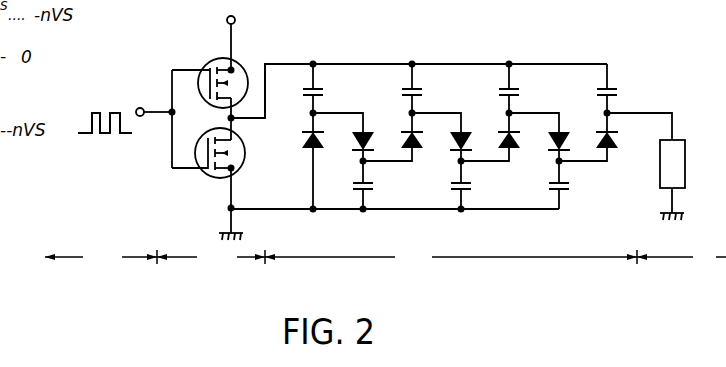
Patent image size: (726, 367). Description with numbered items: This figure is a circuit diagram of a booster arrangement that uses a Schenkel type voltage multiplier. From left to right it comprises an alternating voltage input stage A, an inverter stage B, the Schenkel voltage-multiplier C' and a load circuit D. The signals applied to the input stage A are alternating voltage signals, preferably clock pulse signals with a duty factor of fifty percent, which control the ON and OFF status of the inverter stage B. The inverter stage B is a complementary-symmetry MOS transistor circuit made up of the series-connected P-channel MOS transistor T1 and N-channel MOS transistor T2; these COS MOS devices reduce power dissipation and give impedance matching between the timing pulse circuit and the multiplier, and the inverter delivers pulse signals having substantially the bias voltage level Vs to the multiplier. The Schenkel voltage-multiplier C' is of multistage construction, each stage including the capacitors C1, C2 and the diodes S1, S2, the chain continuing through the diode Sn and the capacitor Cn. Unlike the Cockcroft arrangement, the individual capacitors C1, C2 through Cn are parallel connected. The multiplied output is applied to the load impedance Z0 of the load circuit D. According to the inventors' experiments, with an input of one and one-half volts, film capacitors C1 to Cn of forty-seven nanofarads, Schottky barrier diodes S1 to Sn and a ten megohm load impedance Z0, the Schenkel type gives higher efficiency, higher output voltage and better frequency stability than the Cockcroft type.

The P-channel MOS transistor T1 is at (207, 65).
The N-channel MOS transistor T2 is at (214, 179).
The bias voltage level Vs is at (231, 12).
The capacitor C1 is at (303, 88).
The capacitor C2 is at (351, 185).
The capacitor Cn is at (620, 88).
The diode S1 is at (301, 161).
The diode S2 is at (343, 140).
The diode Sn is at (601, 138).
The load impedance Z0 is at (685, 167).
The alternating voltage input stage A is at (101, 258).
The inverter stage B is at (211, 258).
The Schenkel voltage-multiplier C' is at (451, 258).
The load circuit D is at (681, 258).